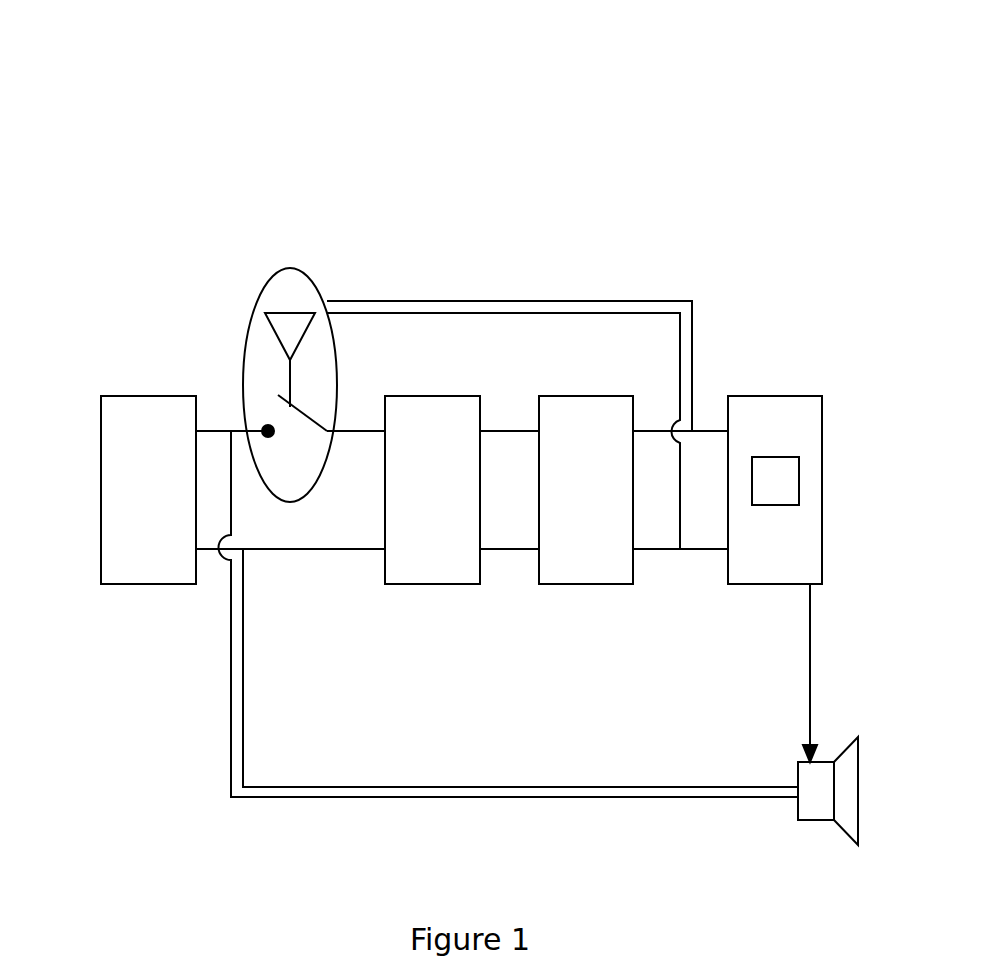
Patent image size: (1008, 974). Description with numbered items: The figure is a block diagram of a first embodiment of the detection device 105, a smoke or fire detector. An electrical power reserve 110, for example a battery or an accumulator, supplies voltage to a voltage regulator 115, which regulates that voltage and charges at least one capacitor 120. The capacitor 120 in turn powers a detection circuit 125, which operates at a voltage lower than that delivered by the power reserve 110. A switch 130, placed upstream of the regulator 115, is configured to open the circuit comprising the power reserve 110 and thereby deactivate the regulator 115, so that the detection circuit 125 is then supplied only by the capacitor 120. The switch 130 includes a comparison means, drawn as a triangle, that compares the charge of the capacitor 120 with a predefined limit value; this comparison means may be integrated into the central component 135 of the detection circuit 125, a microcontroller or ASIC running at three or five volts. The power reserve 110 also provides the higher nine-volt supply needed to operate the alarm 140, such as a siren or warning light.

The detection device 105 is at (514, 123).
The electrical power reserve 110 is at (131, 575).
The voltage regulator 115 is at (415, 575).
The capacitor 120 is at (569, 575).
The detection circuit 125 is at (746, 575).
The switch 130 is at (290, 290).
The central component 135 is at (779, 470).
The alarm 140 is at (817, 815).